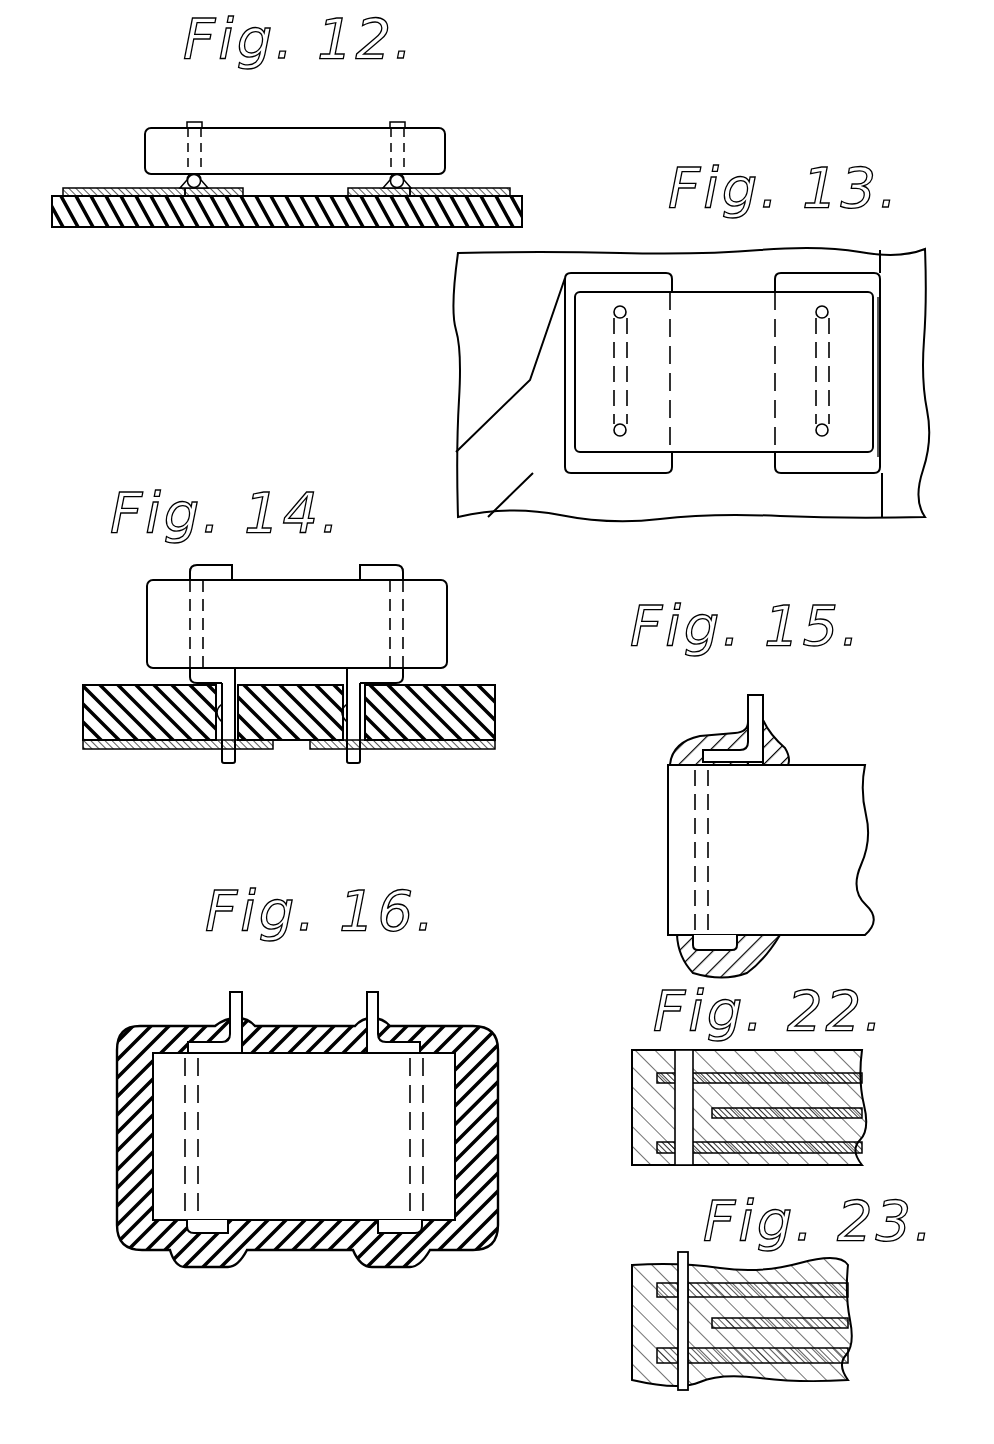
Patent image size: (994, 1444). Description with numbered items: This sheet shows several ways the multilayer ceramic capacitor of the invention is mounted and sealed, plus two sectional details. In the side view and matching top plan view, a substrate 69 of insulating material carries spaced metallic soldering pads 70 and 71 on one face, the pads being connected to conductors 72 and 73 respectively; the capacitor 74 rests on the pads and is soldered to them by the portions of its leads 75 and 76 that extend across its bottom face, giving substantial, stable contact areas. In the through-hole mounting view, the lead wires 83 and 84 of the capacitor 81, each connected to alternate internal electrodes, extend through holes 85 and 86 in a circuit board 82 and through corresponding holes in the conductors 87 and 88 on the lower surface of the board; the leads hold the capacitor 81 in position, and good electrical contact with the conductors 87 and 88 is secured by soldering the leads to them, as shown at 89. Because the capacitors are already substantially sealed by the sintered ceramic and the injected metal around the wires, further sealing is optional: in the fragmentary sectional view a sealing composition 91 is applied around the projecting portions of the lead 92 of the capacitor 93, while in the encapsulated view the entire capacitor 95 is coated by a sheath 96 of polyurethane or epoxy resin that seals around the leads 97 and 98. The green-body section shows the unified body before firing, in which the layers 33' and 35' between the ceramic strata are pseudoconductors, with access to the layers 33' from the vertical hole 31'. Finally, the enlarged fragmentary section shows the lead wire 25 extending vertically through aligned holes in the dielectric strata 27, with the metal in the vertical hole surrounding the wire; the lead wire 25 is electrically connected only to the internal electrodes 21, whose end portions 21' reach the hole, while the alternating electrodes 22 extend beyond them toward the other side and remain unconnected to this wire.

In FIG. 12, the substrate 69 is at (113, 215).
In FIG. 13, the substrate 69 is at (470, 333).
In FIG. 12, the soldering pad 70 is at (230, 195).
In FIG. 13, the soldering pad 70 is at (623, 465).
In FIG. 12, the soldering pad 71 is at (363, 193).
In FIG. 13, the soldering pad 71 is at (805, 465).
In FIG. 12, the conductor 72 is at (75, 188).
In FIG. 13, the conductor 72 is at (495, 437).
In FIG. 12, the conductor 73 is at (500, 188).
In FIG. 13, the conductor 73 is at (898, 512).
In FIG. 12, the capacitor 74 is at (305, 140).
In FIG. 13, the capacitor 74 is at (705, 443).
In FIG. 12, the lead 75 is at (193, 122).
In FIG. 13, the lead 75 is at (617, 328).
In FIG. 12, the lead 76 is at (398, 122).
In FIG. 13, the lead 76 is at (818, 333).
In FIG. 14, the capacitor 81 is at (300, 588).
In FIG. 14, the circuit board 82 is at (480, 710).
In FIG. 14, the lead wire 83 is at (190, 603).
In FIG. 14, the lead wire 84 is at (403, 603).
In FIG. 14, the hole 85 is at (228, 710).
In FIG. 14, the hole 86 is at (363, 740).
In FIG. 14, the conductor 87 is at (103, 749).
In FIG. 14, the conductor 88 is at (490, 749).
In FIG. 14, the solder 89 is at (213, 760).
In FIG. 15, the sealing composition 91 is at (695, 738).
In FIG. 15, the lead 92 is at (755, 703).
In FIG. 15, the capacitor 93 is at (732, 855).
In FIG. 16, the capacitor 95 is at (225, 1129).
In FIG. 16, the sheath 96 is at (483, 1127).
In FIG. 16, the lead 97 is at (233, 1003).
In FIG. 16, the lead 98 is at (377, 1002).
In FIG. 22, the vertical hole 31' is at (633, 1107).
In FIG. 22, the pseudoconductor layer 33' is at (788, 1099).
In FIG. 22, the pseudoconductor layer 35' is at (814, 1096).
In FIG. 23, the internal electrode 21 is at (800, 1305).
In FIG. 23, the conductive layer end portion 21' is at (624, 1316).
In FIG. 23, the internal electrode 22 is at (833, 1318).
In FIG. 23, the lead wire 25 is at (680, 1255).
In FIG. 23, the dielectric strata 27 is at (833, 1338).